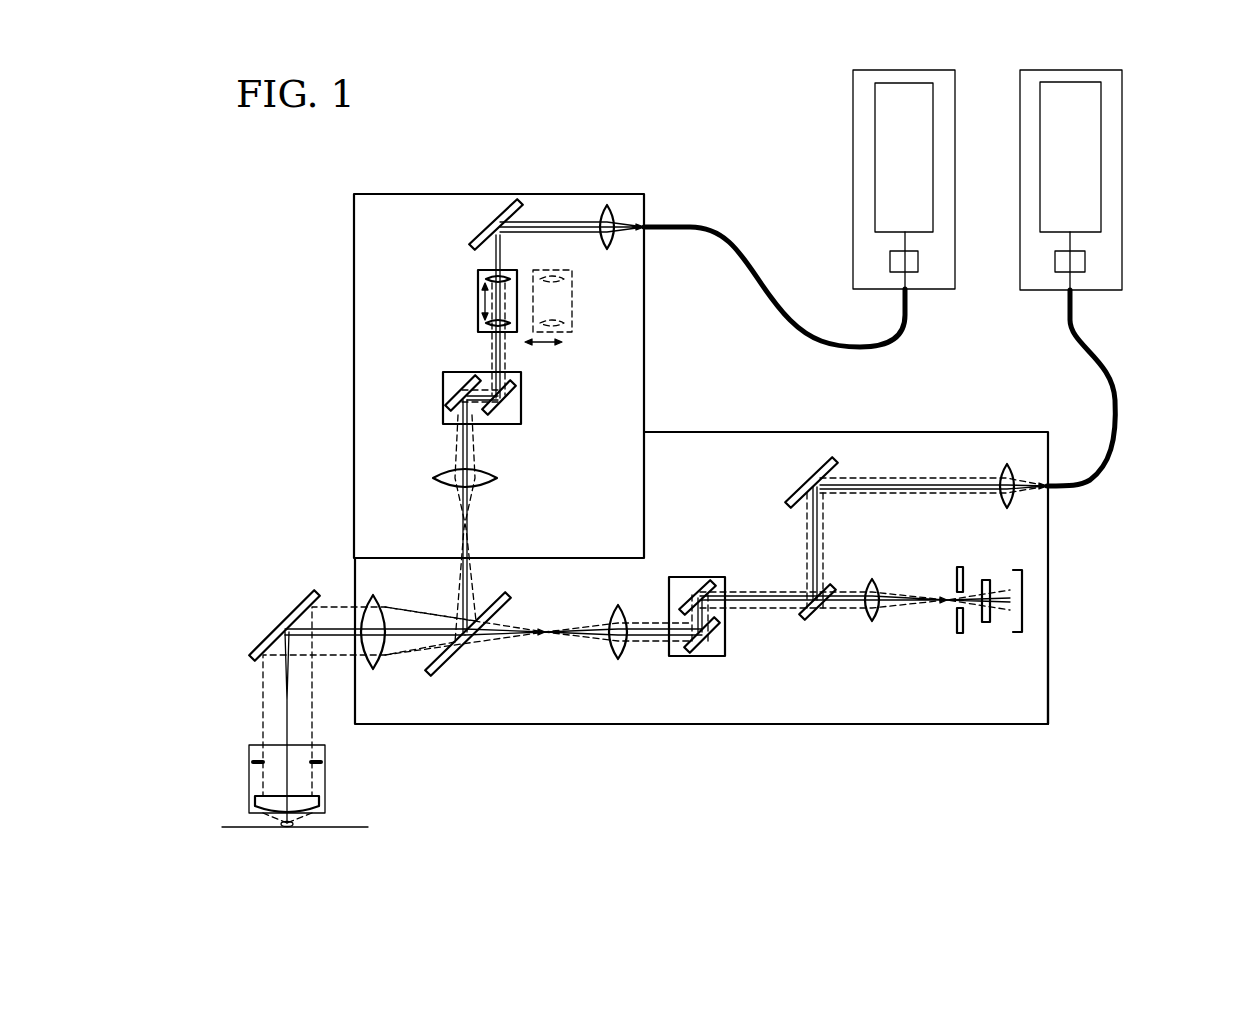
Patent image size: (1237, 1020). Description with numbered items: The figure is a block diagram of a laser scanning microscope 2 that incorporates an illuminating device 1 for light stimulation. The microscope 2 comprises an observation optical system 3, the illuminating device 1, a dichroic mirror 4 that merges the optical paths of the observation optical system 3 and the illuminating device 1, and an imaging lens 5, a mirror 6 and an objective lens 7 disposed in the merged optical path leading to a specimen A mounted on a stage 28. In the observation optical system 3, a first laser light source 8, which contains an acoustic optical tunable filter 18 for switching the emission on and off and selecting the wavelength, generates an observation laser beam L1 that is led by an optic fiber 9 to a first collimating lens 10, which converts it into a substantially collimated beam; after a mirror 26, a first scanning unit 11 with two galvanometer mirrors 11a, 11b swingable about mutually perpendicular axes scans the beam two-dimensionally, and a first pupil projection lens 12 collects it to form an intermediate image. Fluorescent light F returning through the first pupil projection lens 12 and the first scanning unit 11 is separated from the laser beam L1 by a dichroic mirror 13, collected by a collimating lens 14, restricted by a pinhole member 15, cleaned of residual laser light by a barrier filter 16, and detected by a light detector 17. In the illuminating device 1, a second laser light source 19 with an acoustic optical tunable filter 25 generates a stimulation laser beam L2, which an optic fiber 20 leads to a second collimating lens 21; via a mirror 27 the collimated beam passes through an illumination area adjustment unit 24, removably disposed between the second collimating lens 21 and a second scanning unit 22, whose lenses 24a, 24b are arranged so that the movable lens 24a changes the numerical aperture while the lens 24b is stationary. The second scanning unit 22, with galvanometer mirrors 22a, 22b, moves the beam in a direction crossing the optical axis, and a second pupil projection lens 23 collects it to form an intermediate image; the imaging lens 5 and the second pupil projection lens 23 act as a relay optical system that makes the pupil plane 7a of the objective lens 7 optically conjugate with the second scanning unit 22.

The illuminating device 1 is at (436, 194).
The laser scanning microscope 2 is at (800, 762).
The observation optical system 3 is at (905, 703).
The dichroic mirror 4 is at (455, 668).
The imaging lens 5 is at (388, 655).
The mirror 6 is at (300, 598).
The objective lens 7 is at (325, 780).
The pupil plane 7a is at (325, 752).
The first laser light source 8 is at (1122, 140).
The optic fiber 9 is at (1113, 375).
The first collimating lens 10 is at (1007, 463).
The first scanning unit 11 is at (724, 560).
The galvanometer mirror 11a is at (710, 583).
The galvanometer mirror 11b is at (705, 656).
The first pupil projection lens 12 is at (624, 660).
The dichroic mirror 13 is at (812, 620).
The collimating lens 14 is at (872, 578).
The pinhole member 15 is at (957, 570).
The barrier filter 16 is at (986, 580).
The light detector 17 is at (1022, 583).
The acoustic optical tunable filter 18 is at (1085, 262).
The second laser light source 19 is at (853, 120).
The optic fiber 20 is at (862, 350).
The second collimating lens 21 is at (607, 205).
The second scanning unit 22 is at (522, 428).
The galvanometer mirror 22a is at (521, 400).
The galvanometer mirror 22b is at (443, 388).
The second pupil projection lens 23 is at (497, 478).
The illumination area adjustment unit 24 is at (474, 293).
The lens 24a is at (480, 276).
The lens 24b is at (480, 323).
The acoustic optical tunable filter 25 is at (890, 260).
The mirror 26 is at (822, 460).
The mirror 27 is at (493, 222).
The stage 28 is at (368, 827).
The specimen A is at (292, 827).
The fluorescent light F is at (897, 605).
The observation laser beam L1 is at (918, 478).
The stimulation laser beam L2 is at (558, 225).